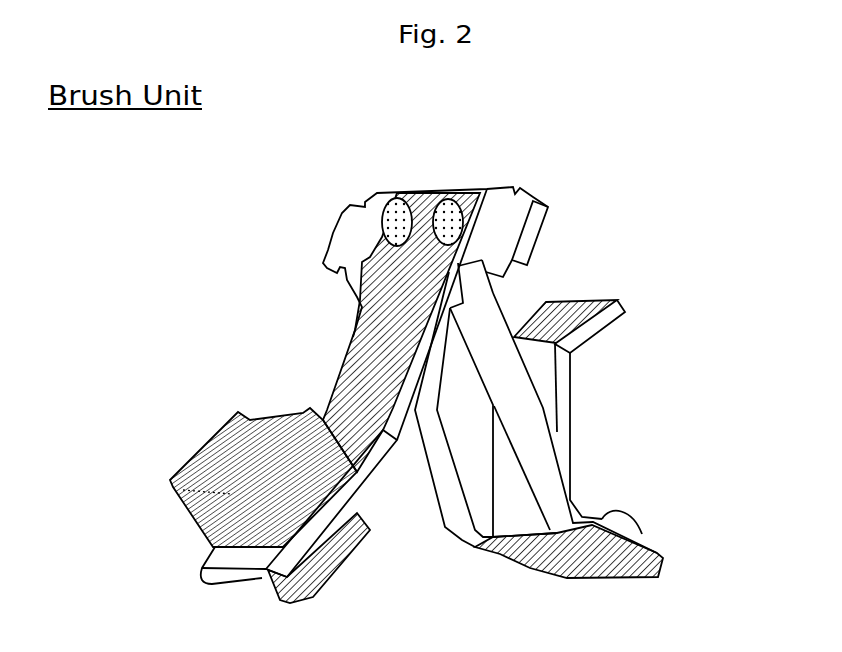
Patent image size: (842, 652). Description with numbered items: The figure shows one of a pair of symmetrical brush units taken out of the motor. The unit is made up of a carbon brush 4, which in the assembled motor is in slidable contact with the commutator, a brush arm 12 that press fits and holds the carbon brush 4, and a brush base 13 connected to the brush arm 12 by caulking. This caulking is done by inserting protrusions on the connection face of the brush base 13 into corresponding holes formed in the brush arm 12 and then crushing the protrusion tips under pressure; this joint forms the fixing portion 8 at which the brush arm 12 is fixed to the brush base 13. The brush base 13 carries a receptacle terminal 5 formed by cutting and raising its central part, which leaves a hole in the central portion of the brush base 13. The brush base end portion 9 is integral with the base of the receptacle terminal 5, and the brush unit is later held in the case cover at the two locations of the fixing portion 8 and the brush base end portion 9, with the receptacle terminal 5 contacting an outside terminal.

The carbon brush 4 is at (238, 413).
The receptacle terminal 5 is at (563, 398).
The fixing portion 8 is at (372, 240).
The brush base end portion 9 is at (665, 551).
The brush arm 12 is at (357, 350).
The brush base 13 is at (503, 238).